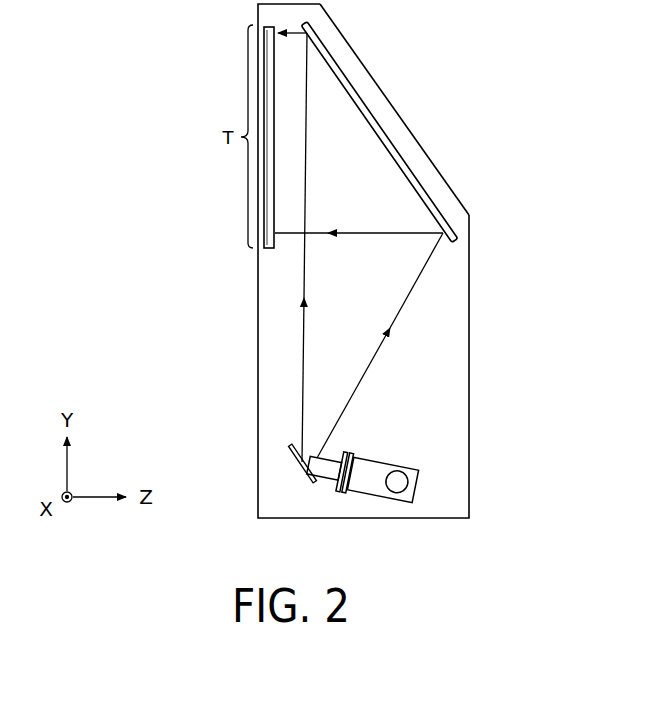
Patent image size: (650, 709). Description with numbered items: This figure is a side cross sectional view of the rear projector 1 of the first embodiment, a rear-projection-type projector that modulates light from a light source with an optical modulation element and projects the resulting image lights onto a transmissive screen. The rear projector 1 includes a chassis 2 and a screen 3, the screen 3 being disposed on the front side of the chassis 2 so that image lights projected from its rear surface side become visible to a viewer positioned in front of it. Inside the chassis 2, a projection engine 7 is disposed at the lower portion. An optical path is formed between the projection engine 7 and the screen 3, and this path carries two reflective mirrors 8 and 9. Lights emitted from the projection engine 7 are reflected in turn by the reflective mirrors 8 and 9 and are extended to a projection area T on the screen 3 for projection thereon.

The rear projector 1 is at (417, 104).
The chassis 2 is at (455, 193).
The screen 3 is at (220, 71).
The projection engine 7 is at (404, 453).
The reflective mirror 8 is at (303, 470).
The reflective mirror 9 is at (340, 72).